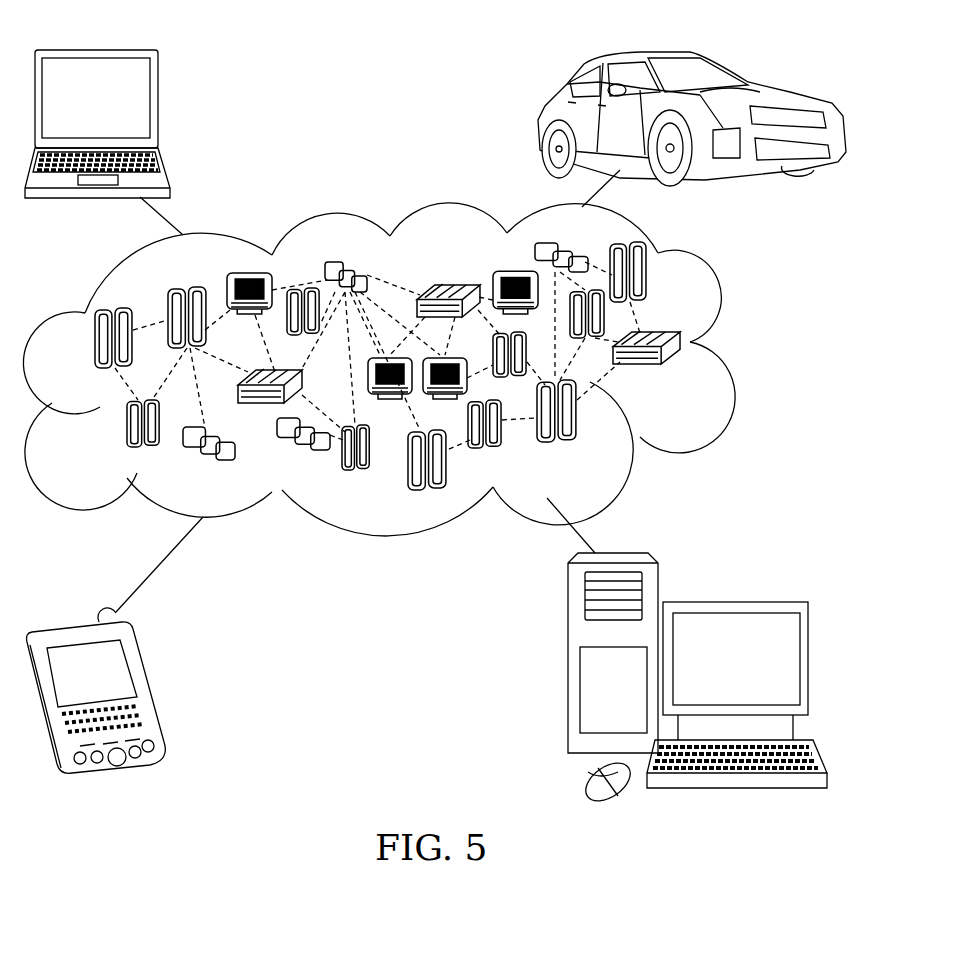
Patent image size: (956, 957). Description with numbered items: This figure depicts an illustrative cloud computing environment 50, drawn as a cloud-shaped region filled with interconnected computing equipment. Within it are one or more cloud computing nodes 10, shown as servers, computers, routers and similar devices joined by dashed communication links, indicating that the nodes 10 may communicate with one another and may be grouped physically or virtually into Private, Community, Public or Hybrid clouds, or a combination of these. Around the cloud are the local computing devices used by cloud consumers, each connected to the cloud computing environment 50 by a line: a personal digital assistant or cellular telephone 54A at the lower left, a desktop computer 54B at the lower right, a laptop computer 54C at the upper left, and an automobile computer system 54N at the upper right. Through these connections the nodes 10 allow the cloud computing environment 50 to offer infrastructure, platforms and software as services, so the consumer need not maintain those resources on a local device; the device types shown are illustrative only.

The laptop computer 54C is at (160, 104).
The automobile computer system 54N is at (540, 117).
The personal digital assistant (PDA) or cellular telephone 54A is at (150, 688).
The desktop computer 54B is at (735, 602).
The cloud computing environment 50 is at (732, 352).
The cloud computing node 10 is at (688, 376).